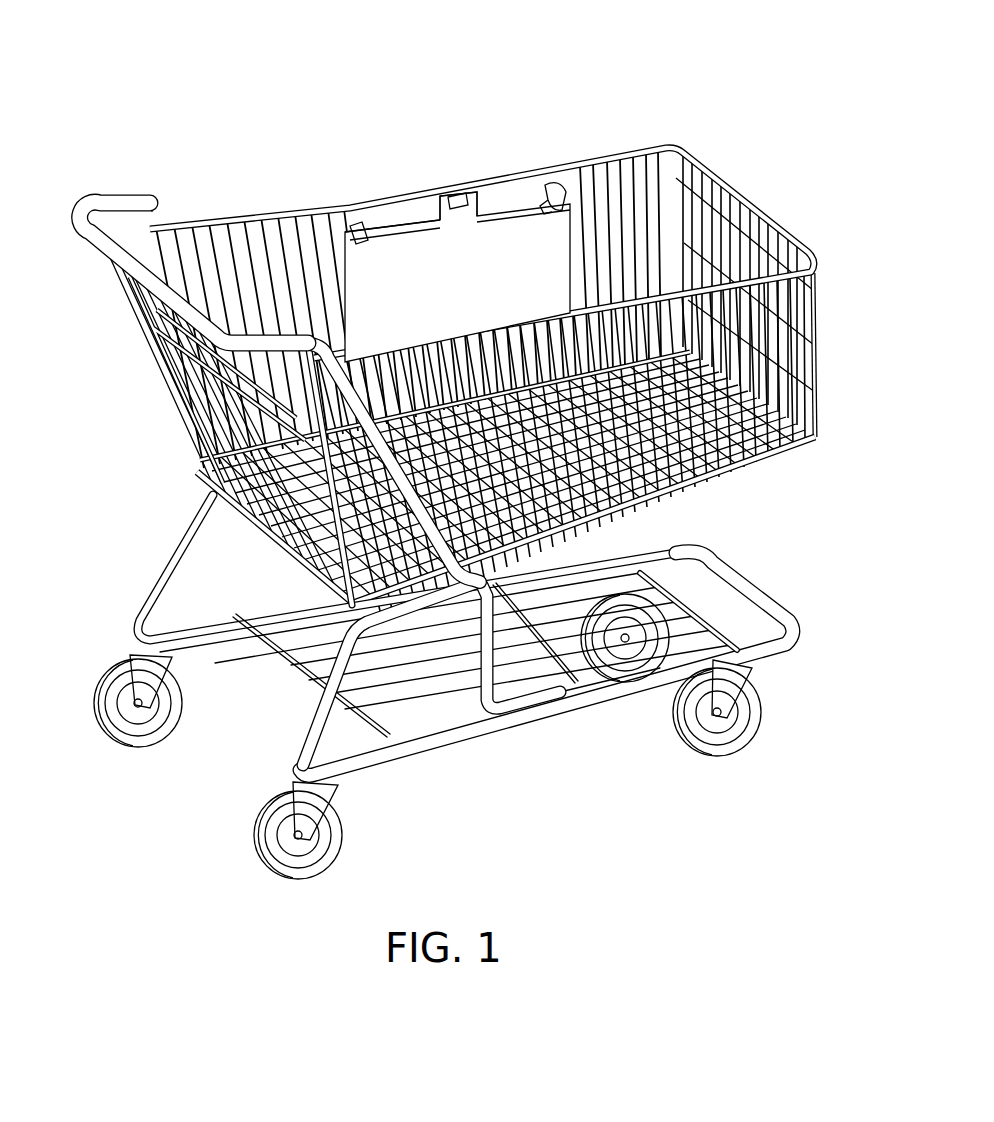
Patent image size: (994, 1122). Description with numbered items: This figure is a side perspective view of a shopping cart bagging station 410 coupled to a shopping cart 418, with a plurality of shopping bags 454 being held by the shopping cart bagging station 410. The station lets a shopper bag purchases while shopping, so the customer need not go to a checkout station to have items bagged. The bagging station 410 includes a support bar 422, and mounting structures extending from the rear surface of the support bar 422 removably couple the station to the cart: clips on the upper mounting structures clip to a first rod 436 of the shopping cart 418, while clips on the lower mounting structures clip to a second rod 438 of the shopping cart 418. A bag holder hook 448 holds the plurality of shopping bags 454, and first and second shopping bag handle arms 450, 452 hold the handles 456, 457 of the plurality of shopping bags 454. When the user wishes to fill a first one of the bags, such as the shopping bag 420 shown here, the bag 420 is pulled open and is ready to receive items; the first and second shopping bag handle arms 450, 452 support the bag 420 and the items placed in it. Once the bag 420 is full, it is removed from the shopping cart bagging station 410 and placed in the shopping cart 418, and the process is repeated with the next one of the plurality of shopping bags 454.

The shopping cart bagging station 410 is at (360, 88).
The shopping cart 418 is at (136, 444).
The shopping bag 420 is at (441, 193).
The support bar 422 is at (406, 198).
The first rod 436 is at (623, 150).
The second rod 438 is at (657, 160).
The bag holder hook 448 is at (466, 195).
The first shopping bag handle arm 450 is at (236, 212).
The second shopping bag handle arm 452 is at (556, 215).
The plurality of shopping bags 454 is at (500, 298).
The handle 456 is at (355, 215).
The handle 457 is at (578, 184).